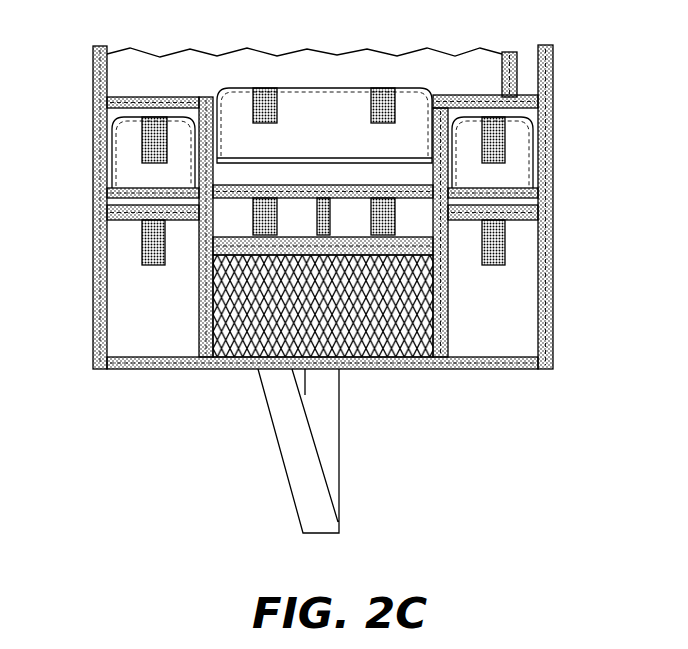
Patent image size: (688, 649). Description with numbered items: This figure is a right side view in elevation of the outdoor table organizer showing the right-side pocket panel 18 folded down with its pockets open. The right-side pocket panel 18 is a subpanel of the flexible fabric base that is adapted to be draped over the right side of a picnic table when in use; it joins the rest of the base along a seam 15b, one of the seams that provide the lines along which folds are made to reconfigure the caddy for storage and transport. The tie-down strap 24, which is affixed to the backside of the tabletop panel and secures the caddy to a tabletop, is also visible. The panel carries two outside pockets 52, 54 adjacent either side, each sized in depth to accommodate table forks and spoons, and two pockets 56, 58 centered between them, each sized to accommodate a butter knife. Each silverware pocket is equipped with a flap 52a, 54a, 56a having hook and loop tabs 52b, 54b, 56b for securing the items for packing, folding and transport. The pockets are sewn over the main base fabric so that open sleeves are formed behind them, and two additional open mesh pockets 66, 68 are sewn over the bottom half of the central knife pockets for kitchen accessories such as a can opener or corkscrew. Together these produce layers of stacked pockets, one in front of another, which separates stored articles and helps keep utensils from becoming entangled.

The seam 15b is at (523, 58).
The right-side pocket panel 18 is at (101, 282).
The tie-down strap 24 is at (312, 515).
The outside pocket 52 is at (157, 347).
The flap 52a is at (120, 160).
The hook and loop tab 52b is at (155, 118).
The outside pocket 54 is at (522, 333).
The flap 54a is at (523, 168).
The hook and loop tab 54b is at (500, 137).
The pocket 56 is at (230, 227).
The flap 56a is at (335, 103).
The hook and loop tab 56b is at (264, 88).
The pocket 58 is at (418, 230).
The open mesh pocket 66 is at (250, 354).
The open mesh pocket 68 is at (418, 360).